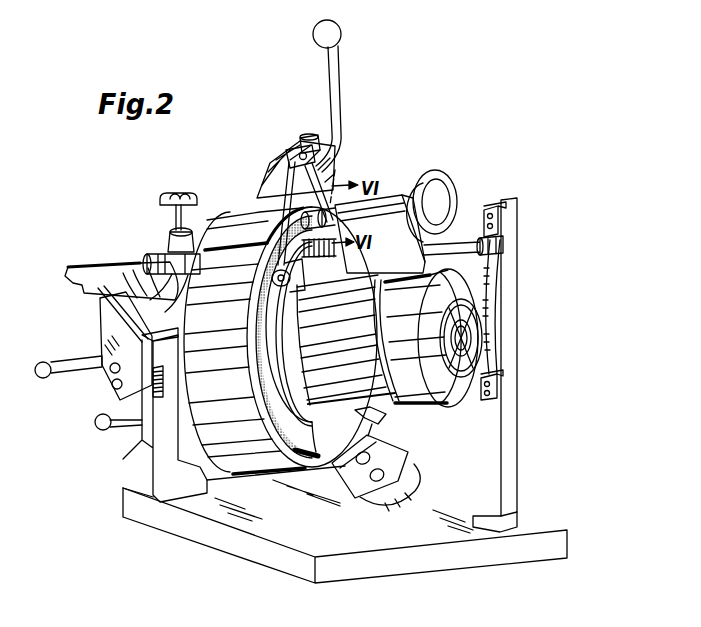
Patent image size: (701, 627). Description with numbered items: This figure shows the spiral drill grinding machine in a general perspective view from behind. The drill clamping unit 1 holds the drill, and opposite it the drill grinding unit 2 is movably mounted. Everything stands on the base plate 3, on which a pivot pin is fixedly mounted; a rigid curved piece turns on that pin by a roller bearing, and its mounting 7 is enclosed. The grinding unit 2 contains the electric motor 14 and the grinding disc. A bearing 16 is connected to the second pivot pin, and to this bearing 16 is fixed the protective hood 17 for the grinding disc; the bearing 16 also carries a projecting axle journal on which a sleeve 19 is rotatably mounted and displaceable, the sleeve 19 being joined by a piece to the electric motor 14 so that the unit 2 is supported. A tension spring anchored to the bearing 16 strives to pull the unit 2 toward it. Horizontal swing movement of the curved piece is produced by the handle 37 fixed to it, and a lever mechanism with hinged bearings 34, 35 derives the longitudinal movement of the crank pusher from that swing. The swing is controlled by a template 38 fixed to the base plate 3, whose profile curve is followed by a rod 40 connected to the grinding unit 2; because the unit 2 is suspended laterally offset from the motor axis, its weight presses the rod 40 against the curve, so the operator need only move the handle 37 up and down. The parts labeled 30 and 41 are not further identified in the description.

The drill clamping unit 1 is at (120, 397).
The drill grinding unit 2 is at (450, 283).
The base plate 3 is at (543, 543).
The mounting 7 is at (378, 438).
The electric motor 14 is at (463, 340).
The bearing 16 is at (222, 223).
The protective hood 17 is at (268, 450).
The sleeve 19 is at (403, 197).
The sight glass 30 is at (442, 203).
The hinged bearing 34 is at (270, 247).
The hinged bearing 35 is at (298, 148).
The handle 37 is at (340, 88).
The template 38 is at (507, 453).
The rod 40 is at (508, 242).
The bracket 41 is at (498, 207).